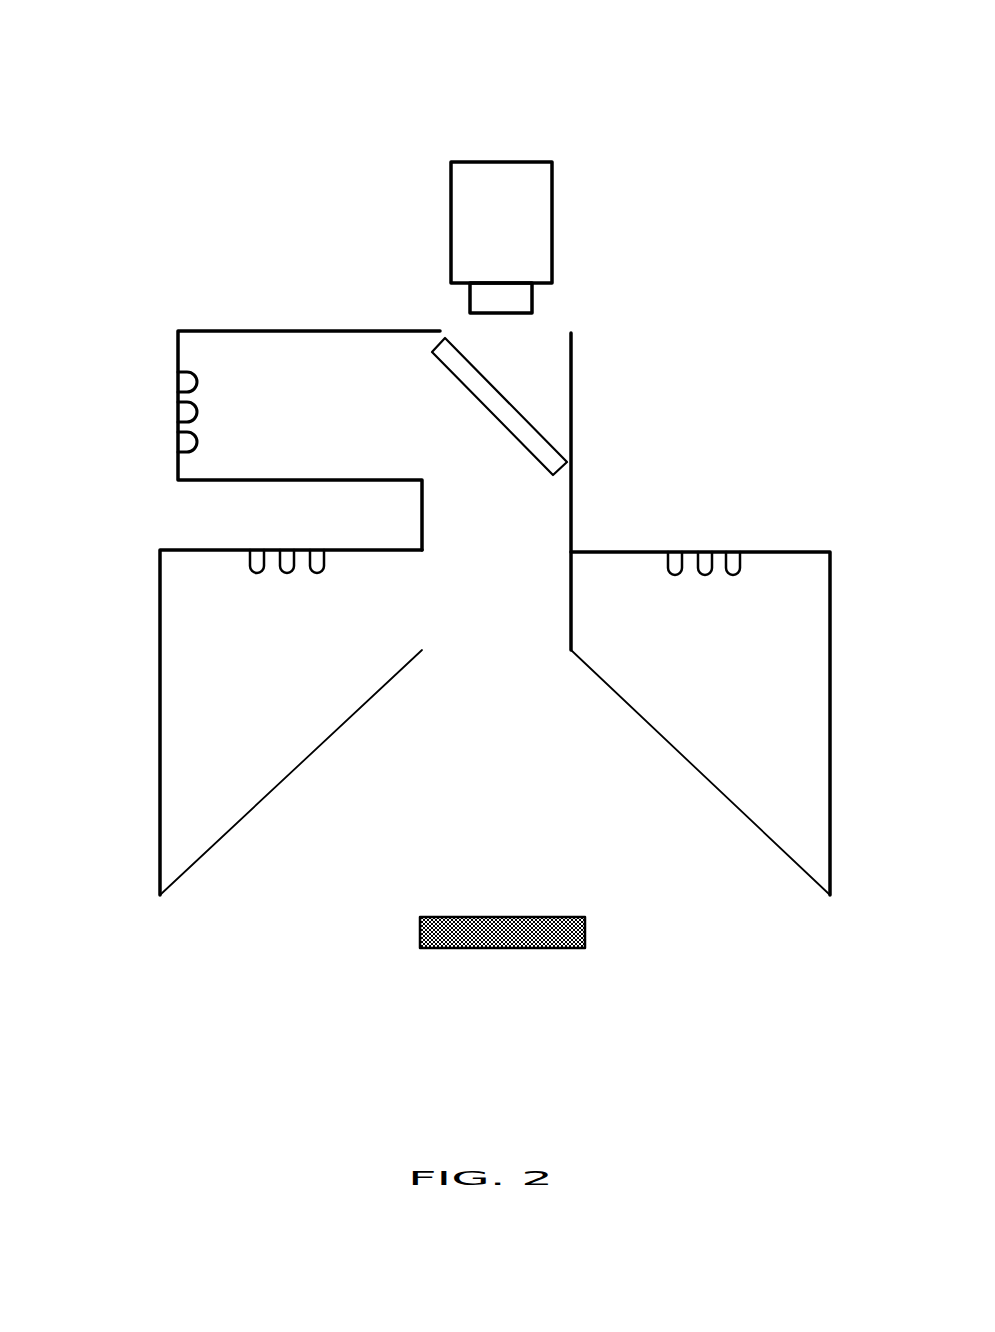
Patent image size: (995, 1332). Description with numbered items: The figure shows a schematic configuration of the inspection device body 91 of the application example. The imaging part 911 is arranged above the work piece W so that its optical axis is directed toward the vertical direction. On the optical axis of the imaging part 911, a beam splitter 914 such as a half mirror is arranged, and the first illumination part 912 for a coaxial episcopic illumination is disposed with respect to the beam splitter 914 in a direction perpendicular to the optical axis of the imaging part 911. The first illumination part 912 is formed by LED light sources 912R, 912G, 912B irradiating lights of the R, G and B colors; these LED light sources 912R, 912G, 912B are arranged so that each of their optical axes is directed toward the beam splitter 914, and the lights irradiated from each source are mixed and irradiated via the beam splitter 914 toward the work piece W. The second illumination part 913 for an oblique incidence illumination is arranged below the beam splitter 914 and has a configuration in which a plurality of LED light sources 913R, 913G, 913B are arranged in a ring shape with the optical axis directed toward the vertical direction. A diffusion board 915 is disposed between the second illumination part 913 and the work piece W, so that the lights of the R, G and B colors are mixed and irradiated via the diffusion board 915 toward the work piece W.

The inspection device body 91 is at (362, 100).
The imaging part 911 is at (552, 222).
The first illumination part 912 is at (253, 358).
The LED light source 912R is at (185, 370).
The LED light source 912G is at (177, 412).
The LED light source 912B is at (177, 440).
The second illumination part 913 is at (222, 808).
The LED light source 913R is at (255, 552).
The LED light source 913G is at (287, 550).
The LED light source 913B is at (325, 567).
The beam splitter 914 is at (520, 413).
The diffusion board 915 is at (668, 745).
The work piece W is at (502, 948).